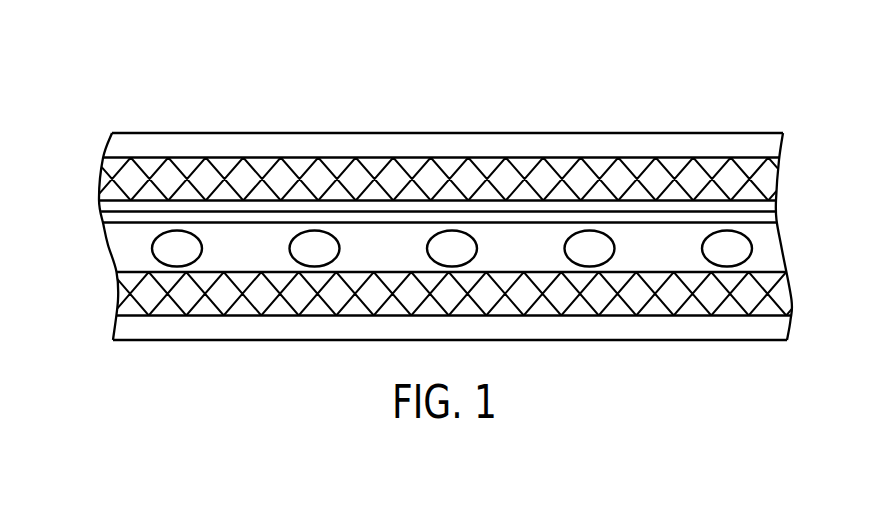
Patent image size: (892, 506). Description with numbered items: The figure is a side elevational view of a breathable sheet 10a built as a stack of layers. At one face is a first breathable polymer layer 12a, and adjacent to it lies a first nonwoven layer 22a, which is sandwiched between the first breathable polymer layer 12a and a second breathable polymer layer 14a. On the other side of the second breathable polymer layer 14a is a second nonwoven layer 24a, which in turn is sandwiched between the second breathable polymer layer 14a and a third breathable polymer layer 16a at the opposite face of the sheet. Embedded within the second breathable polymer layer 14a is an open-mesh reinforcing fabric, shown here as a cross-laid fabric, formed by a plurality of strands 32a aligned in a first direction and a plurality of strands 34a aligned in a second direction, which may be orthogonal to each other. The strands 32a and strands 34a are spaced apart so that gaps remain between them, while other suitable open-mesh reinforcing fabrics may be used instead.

The breathable sheet 10a is at (112, 90).
The first breathable polymer layer 12a is at (125, 325).
The second breathable polymer layer 14a is at (451, 258).
The third breathable polymer layer 16a is at (767, 150).
The first nonwoven layer 22a is at (767, 288).
The second nonwoven layer 24a is at (767, 178).
The plurality of strands aligned in a first direction 32a is at (167, 248).
The plurality of strands aligned in a second direction 34a is at (108, 214).